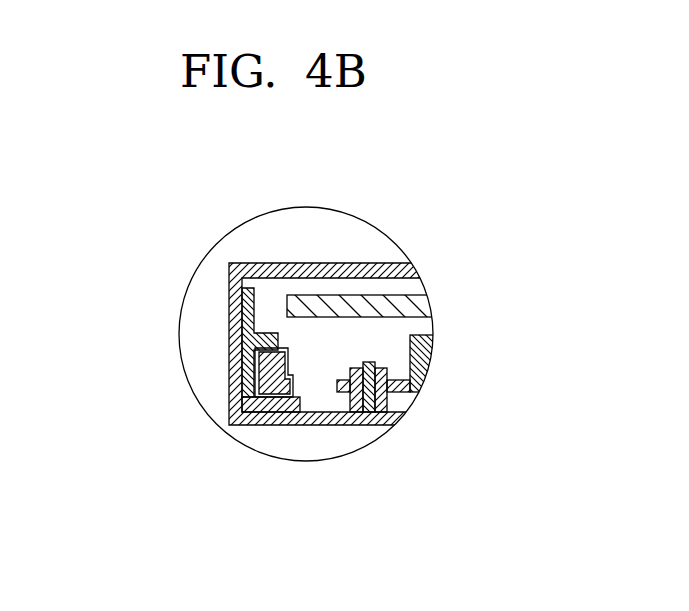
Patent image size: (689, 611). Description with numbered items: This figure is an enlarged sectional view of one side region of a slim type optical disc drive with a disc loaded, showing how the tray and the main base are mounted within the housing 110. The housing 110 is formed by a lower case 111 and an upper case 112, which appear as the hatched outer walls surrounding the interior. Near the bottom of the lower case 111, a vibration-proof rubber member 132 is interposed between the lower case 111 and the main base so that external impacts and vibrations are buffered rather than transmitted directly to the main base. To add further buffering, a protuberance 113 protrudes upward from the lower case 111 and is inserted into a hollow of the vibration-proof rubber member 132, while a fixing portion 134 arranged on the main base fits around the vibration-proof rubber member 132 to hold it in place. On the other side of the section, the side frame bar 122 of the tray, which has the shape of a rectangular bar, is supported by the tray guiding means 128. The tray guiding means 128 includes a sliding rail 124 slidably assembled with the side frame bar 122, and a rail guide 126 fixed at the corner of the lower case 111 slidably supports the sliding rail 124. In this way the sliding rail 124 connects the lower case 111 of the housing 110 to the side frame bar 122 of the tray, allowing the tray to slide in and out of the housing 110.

The housing 110 is at (103, 303).
The lower case 111 is at (230, 367).
The upper case 112 is at (230, 300).
The protuberance 113 is at (372, 413).
The side frame bar 122 is at (275, 393).
The sliding rail 124 is at (257, 410).
The rail guide 126 is at (234, 403).
The tray guiding means 128 is at (282, 544).
The vibration-proof rubber member 132 is at (397, 415).
The fixing portion 134 is at (341, 412).